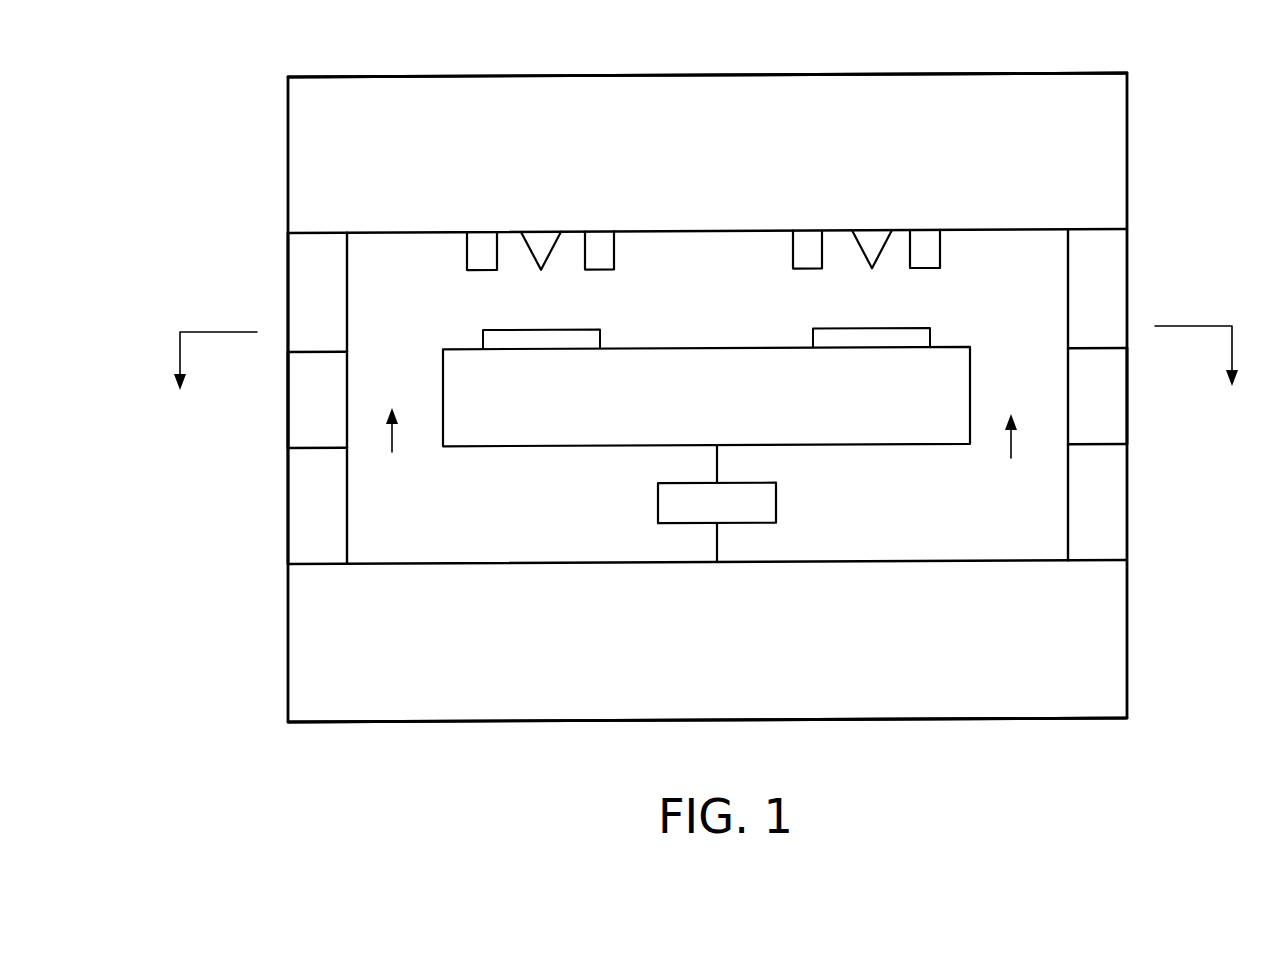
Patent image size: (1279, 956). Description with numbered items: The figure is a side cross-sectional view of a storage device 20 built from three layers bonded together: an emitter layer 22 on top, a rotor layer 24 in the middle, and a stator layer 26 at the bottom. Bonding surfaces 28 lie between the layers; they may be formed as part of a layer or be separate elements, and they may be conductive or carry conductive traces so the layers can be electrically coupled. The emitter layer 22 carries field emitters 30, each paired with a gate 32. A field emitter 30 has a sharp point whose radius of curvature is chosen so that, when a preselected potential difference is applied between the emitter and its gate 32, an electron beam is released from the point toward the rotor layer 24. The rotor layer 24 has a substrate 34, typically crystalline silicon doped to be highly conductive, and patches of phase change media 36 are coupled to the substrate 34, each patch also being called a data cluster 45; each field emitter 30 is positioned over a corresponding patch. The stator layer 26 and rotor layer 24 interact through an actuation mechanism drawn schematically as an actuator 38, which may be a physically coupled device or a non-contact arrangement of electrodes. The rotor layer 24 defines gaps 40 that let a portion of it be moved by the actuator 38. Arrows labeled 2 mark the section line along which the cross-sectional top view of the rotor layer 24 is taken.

The storage device 20 is at (1171, 96).
The emitter layer 22 is at (238, 80).
The rotor layer 24 is at (160, 338).
The stator layer 26 is at (240, 566).
The bonding surfaces 28 is at (312, 315).
The field emitter 30 is at (542, 245).
The gate 32 is at (482, 250).
The substrate 34 is at (307, 398).
The phase change media 36 is at (548, 340).
The data cluster 45 is at (759, 321).
The actuator 38 is at (745, 498).
The gaps 40 is at (703, 451).
The section line 2— 2 is at (706, 378).